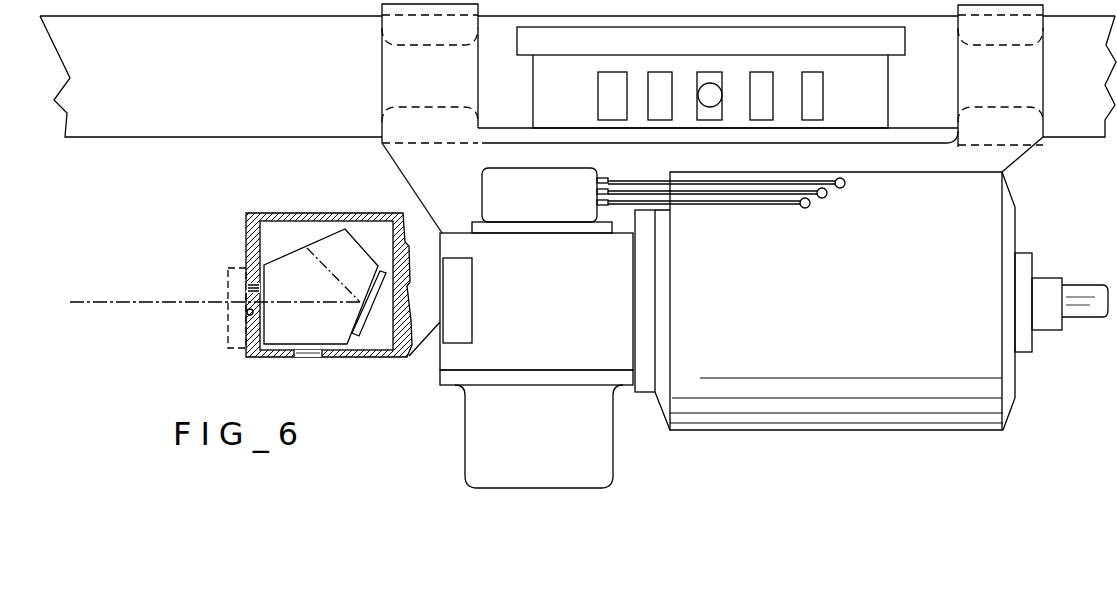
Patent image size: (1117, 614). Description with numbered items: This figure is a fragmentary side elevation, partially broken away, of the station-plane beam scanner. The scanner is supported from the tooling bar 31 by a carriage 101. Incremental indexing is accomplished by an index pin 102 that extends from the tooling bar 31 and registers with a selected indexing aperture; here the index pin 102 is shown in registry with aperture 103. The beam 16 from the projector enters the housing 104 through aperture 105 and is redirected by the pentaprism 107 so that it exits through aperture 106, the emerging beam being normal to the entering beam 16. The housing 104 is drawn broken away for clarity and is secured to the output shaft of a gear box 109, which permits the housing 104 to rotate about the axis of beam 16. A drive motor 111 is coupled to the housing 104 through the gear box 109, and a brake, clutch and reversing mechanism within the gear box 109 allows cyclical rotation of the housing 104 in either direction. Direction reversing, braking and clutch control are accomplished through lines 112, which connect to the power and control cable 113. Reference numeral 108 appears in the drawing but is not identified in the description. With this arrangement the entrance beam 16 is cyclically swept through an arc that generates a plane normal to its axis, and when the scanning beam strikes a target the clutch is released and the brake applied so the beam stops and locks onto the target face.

The tooling bar 31 is at (1082, 73).
The carriage 101 is at (996, 90).
The index pin 102 is at (712, 104).
The aperture 103 is at (700, 79).
The housing 104 is at (281, 212).
The aperture 105 is at (247, 313).
The aperture 106 is at (300, 355).
The pentaprism 107 is at (298, 292).
The bracket 108 is at (307, 393).
The gear box 109 is at (553, 333).
The drive motor 111 is at (838, 310).
The lines 112 is at (628, 201).
The power and control cable 113 is at (1078, 285).
The beam 16 is at (113, 300).